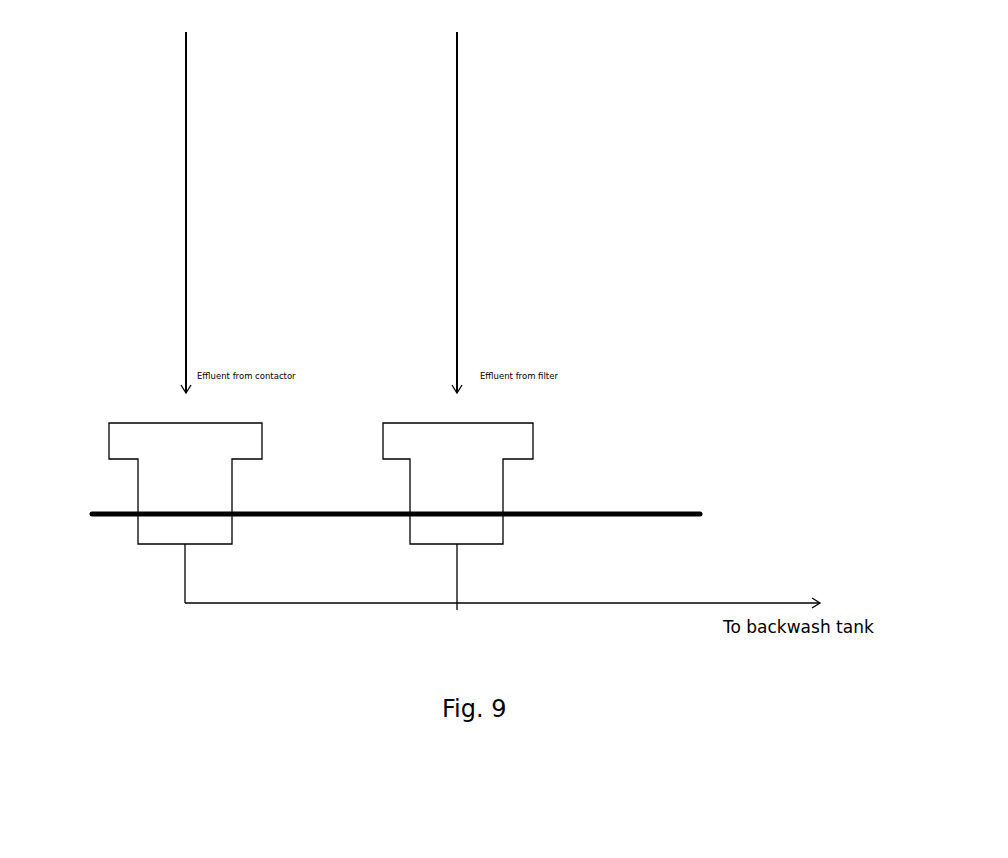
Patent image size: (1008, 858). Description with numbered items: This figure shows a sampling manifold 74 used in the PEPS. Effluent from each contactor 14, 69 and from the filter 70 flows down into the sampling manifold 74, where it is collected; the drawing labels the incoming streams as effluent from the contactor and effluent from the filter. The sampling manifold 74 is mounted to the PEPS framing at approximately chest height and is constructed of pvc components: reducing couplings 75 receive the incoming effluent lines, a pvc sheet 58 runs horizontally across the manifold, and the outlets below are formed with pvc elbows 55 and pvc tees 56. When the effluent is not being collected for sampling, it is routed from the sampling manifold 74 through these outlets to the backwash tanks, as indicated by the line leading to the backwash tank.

The contactor 14 is at (269, 212).
The contactor 69 is at (187, 138).
The filter 70 is at (458, 160).
The sampling manifold 74 is at (410, 463).
The reducing couplings 75 is at (263, 424).
The pvc sheet 58 is at (638, 510).
The pvc elbows 55 is at (186, 602).
The pvc tees 56 is at (457, 610).